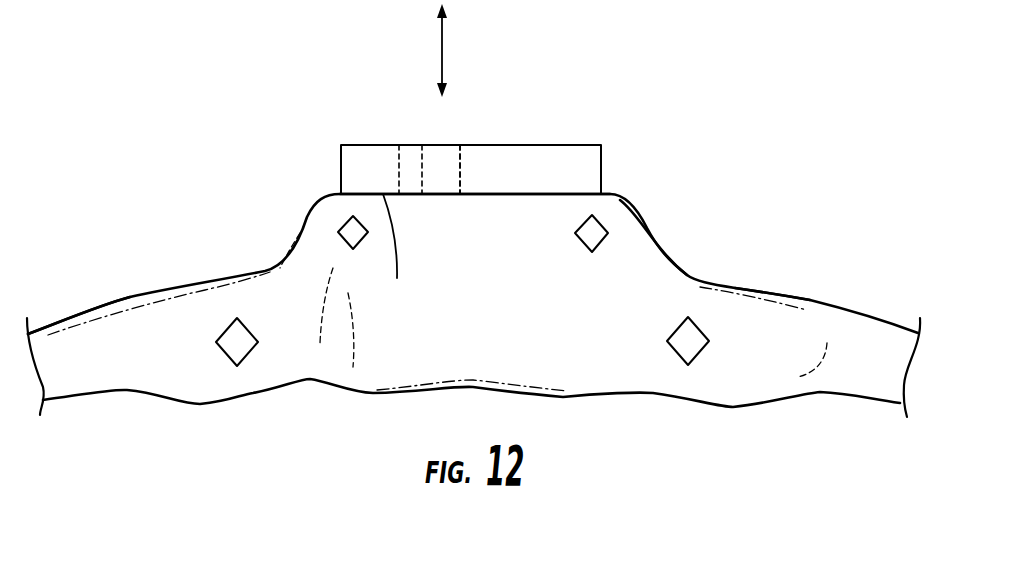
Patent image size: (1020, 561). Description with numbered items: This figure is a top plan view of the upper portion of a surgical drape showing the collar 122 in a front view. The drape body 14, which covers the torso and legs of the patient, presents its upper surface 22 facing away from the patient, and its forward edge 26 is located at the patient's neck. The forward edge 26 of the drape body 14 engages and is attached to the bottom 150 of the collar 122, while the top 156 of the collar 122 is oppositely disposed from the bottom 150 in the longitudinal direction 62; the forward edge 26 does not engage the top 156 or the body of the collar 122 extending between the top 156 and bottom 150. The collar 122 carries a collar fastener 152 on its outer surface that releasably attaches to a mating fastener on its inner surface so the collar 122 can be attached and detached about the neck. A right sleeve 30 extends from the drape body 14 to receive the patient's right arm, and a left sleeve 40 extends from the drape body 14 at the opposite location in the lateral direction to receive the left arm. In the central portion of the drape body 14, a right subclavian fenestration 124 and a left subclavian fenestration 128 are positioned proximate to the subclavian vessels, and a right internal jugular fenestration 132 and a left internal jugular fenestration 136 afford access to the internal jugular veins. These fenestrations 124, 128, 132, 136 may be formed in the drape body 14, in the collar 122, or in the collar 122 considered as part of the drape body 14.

The drape body 14 is at (638, 268).
The upper surface 22 is at (507, 338).
The forward edge 26 is at (394, 254).
The right sleeve 30 is at (87, 317).
The left sleeve 40 is at (800, 298).
The longitudinal direction 62 is at (442, 48).
The collar 122 is at (562, 170).
The right subclavian fenestration 124 is at (240, 345).
The left subclavian fenestration 128 is at (693, 350).
The right internal jugular fenestration 132 is at (345, 230).
The left internal jugular fenestration 136 is at (598, 228).
The bottom 150 is at (503, 194).
The collar fastener 152 is at (455, 165).
The top 156 is at (396, 145).